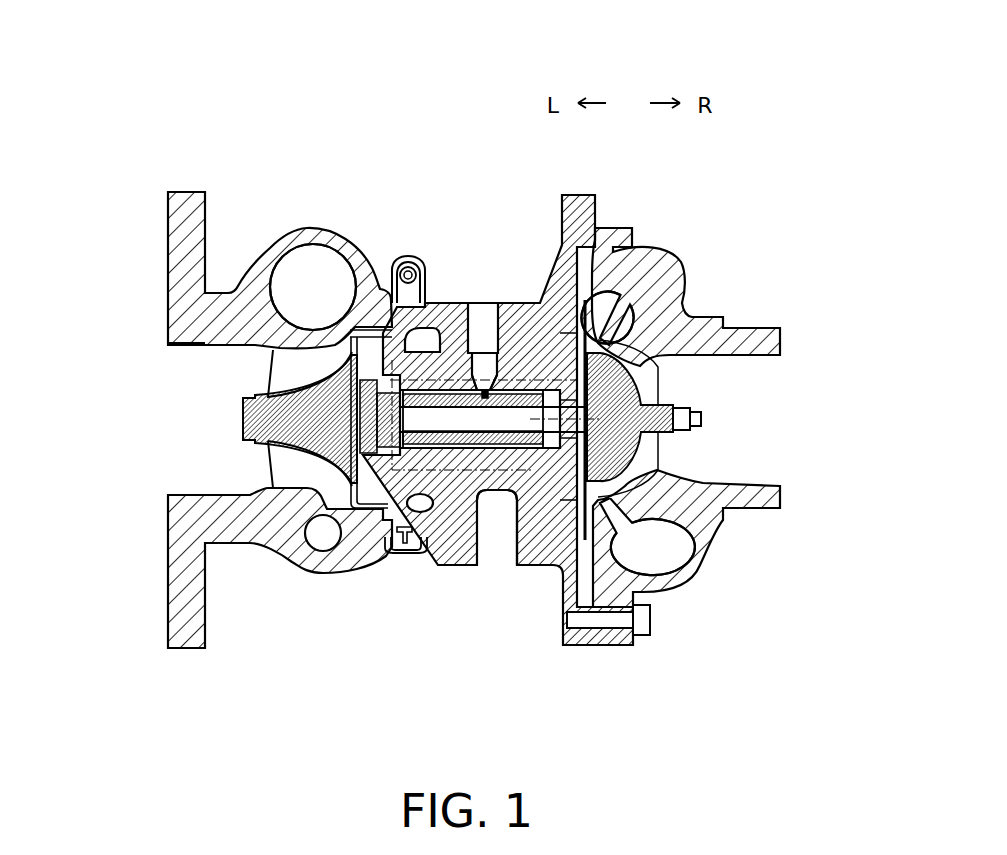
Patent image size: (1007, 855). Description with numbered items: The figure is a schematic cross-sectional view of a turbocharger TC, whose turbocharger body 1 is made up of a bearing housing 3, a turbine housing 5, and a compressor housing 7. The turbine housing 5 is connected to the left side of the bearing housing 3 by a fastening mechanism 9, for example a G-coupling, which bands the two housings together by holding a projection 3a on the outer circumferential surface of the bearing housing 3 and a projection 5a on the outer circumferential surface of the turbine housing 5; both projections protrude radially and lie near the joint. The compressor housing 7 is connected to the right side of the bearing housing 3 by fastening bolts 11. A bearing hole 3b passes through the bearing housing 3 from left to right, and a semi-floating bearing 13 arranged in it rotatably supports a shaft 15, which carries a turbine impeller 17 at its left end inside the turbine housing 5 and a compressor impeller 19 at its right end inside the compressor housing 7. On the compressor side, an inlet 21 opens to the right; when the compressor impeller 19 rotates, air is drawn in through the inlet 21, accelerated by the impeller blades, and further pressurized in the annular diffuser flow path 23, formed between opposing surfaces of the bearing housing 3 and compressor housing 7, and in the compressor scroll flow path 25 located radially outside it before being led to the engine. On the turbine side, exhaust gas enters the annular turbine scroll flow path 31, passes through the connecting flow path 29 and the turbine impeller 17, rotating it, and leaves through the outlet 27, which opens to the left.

The turbocharger TC is at (247, 56).
The turbocharger body 1 is at (291, 122).
The bearing housing 3 is at (583, 196).
The projection 3a is at (413, 553).
The bearing hole 3b is at (467, 460).
The turbine housing 5 is at (363, 252).
The projection 5a is at (400, 550).
The compressor housing 7 is at (615, 228).
The fastening mechanism 9 is at (427, 283).
The fastening bolts 11 is at (655, 632).
The semi-floating bearing 13 is at (535, 390).
The shaft 15 is at (458, 357).
The turbine impeller 17 is at (265, 480).
The compressor impeller 19 is at (660, 452).
The inlet 21 is at (773, 470).
The diffuser flow path 23 is at (568, 257).
The compressor scroll flow path 25 is at (650, 255).
The outlet 27 is at (170, 371).
The connecting flow path 29 is at (335, 326).
The turbine scroll flow path 31 is at (306, 258).